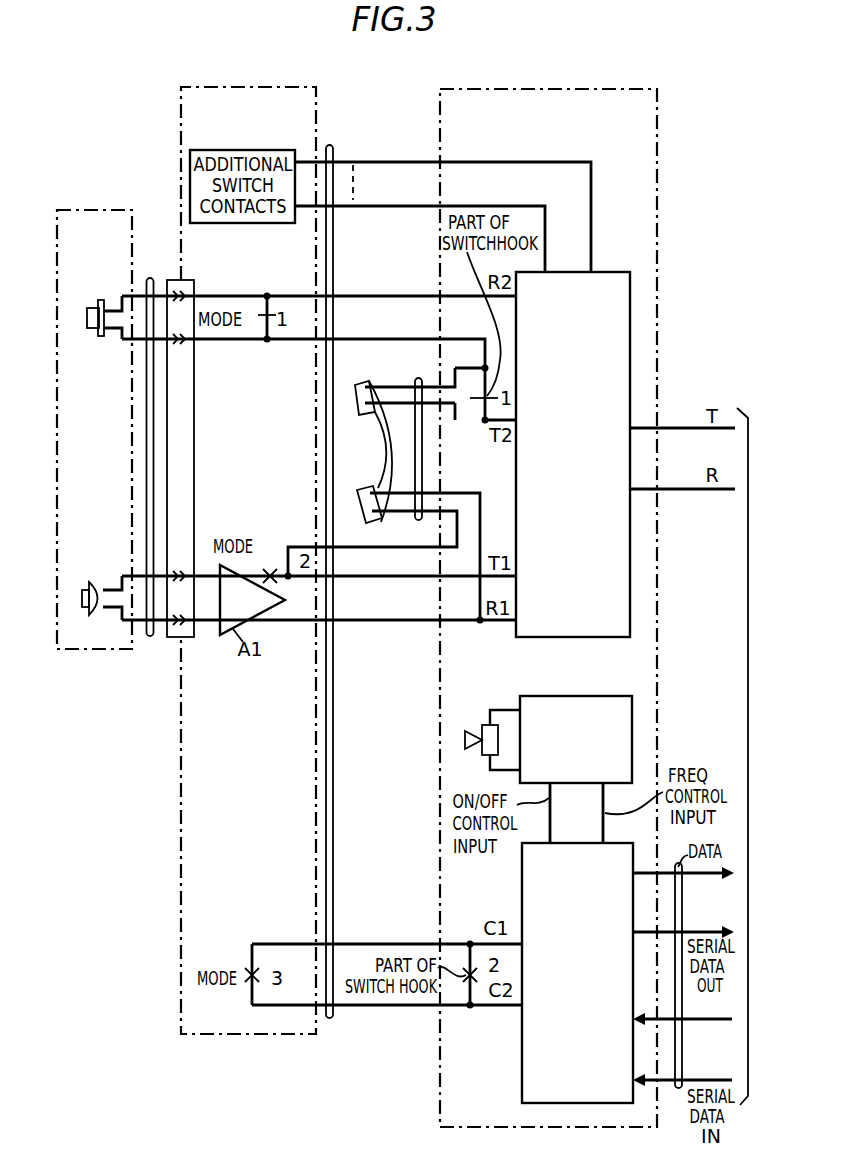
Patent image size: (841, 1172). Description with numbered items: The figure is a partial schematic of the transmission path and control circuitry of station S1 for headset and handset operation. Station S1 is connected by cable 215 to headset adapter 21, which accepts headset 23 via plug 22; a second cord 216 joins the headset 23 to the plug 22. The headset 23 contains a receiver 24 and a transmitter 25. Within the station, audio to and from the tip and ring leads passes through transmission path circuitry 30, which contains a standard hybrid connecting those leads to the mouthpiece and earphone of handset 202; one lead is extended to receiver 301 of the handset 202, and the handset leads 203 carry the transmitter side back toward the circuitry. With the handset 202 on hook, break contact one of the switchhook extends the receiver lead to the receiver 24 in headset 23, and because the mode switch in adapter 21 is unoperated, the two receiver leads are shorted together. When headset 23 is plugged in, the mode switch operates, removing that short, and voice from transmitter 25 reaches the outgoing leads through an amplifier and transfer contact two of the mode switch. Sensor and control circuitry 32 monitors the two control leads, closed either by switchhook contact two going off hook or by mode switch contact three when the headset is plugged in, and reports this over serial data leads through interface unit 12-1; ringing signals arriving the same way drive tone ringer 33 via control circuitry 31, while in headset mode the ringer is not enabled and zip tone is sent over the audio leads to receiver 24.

The headset adapter 21 is at (297, 87).
The station S1 is at (571, 89).
The headset 23 is at (102, 210).
The receiver 24 is at (93, 338).
The transmitter 25 is at (84, 596).
The plug 22 is at (187, 280).
The headset cord 216 is at (147, 280).
The cable 215 is at (327, 145).
The transmission path circuitry 30 is at (600, 272).
The receiver 301 is at (356, 387).
The handset 202 is at (384, 377).
The handset transmitter leads 203 is at (420, 520).
The control circuitry 31 is at (588, 696).
The tone ringer 33 is at (471, 730).
The sensor and control circuitry 32 is at (524, 880).
The interface unit 12-1 is at (727, 914).